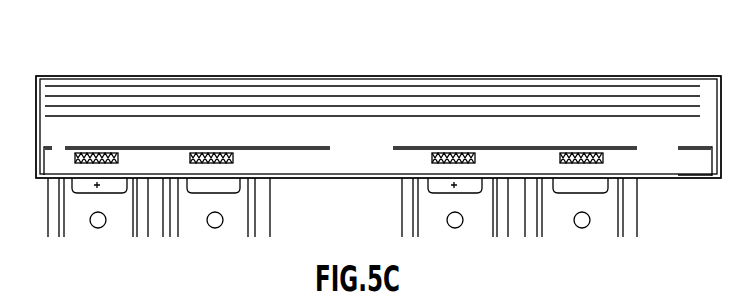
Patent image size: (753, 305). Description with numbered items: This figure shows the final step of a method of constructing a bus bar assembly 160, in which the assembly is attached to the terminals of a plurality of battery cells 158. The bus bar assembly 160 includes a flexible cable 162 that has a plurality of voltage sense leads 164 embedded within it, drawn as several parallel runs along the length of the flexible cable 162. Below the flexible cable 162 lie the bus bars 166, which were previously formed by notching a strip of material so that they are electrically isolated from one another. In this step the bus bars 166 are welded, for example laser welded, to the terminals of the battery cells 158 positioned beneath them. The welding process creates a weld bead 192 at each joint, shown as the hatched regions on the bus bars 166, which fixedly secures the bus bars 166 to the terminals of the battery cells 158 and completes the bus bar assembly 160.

The bus bar assembly 160 is at (515, 56).
The flexible cable 162 is at (384, 83).
The voltage sense leads 164 is at (430, 116).
The bus bars 166 is at (155, 155).
The weld bead 192 is at (92, 150).
The battery cells 158 is at (115, 227).